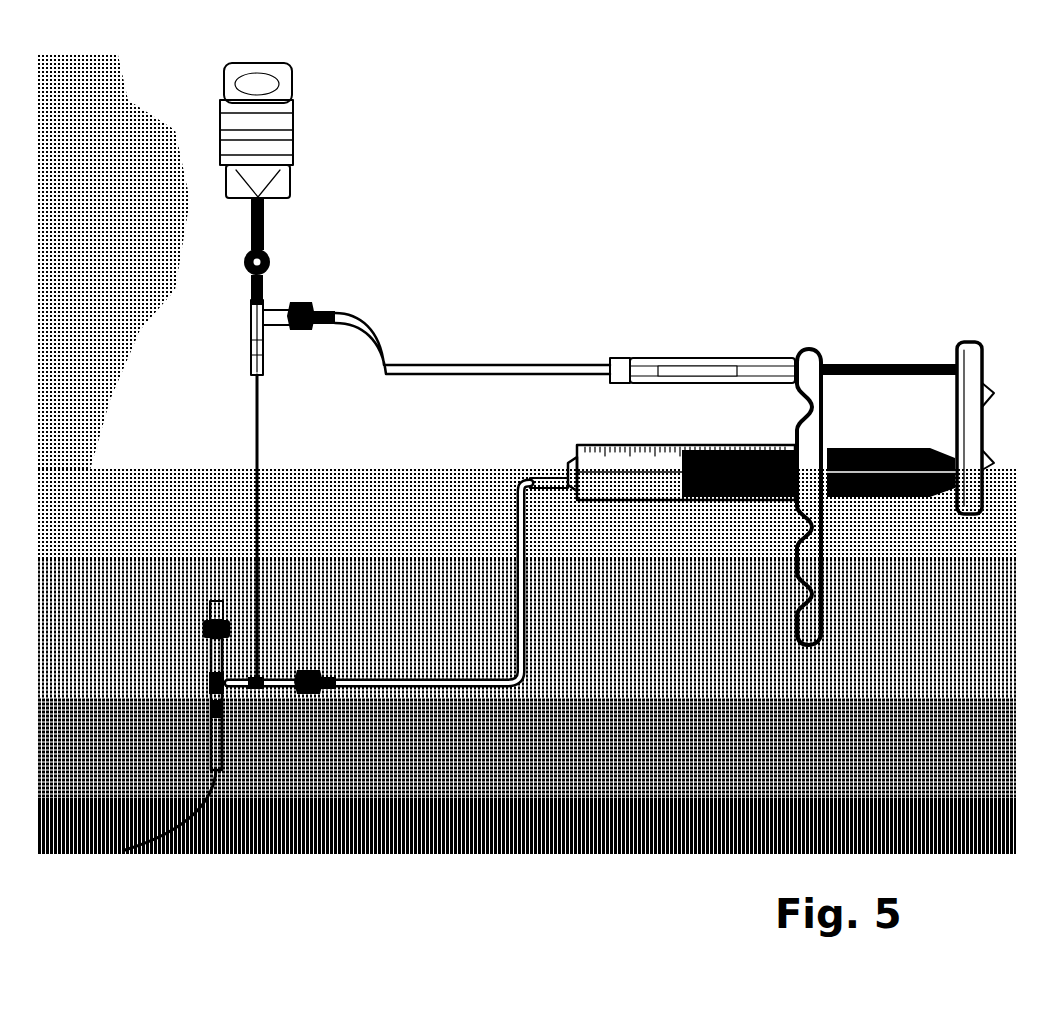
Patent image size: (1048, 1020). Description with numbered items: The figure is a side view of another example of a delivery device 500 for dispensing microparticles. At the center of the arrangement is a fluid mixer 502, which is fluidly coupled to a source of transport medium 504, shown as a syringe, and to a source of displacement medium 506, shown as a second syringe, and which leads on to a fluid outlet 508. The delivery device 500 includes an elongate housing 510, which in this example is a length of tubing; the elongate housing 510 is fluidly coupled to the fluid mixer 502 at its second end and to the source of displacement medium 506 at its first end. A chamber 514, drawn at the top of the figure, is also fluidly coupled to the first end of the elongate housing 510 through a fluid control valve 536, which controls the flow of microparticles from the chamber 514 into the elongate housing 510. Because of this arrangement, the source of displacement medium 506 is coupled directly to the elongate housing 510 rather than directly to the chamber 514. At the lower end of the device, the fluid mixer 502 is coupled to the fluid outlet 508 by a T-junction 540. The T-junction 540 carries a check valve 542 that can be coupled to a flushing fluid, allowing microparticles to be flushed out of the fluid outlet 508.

The delivery device 500 is at (166, 96).
The fluid mixer 502 is at (253, 688).
The source of transport medium 504 is at (630, 500).
The source of displacement medium 506 is at (675, 360).
The fluid outlet 508 is at (218, 778).
The elongate housing 510 is at (258, 466).
The chamber 514 is at (270, 130).
The fluid control valve 536 is at (268, 263).
The T-junction 540 is at (206, 683).
The check valve 542 is at (212, 604).